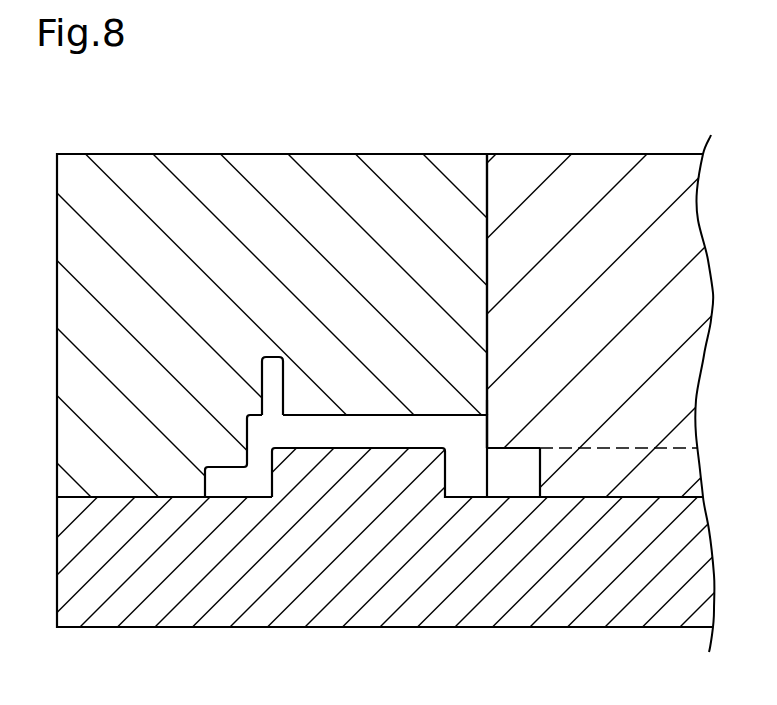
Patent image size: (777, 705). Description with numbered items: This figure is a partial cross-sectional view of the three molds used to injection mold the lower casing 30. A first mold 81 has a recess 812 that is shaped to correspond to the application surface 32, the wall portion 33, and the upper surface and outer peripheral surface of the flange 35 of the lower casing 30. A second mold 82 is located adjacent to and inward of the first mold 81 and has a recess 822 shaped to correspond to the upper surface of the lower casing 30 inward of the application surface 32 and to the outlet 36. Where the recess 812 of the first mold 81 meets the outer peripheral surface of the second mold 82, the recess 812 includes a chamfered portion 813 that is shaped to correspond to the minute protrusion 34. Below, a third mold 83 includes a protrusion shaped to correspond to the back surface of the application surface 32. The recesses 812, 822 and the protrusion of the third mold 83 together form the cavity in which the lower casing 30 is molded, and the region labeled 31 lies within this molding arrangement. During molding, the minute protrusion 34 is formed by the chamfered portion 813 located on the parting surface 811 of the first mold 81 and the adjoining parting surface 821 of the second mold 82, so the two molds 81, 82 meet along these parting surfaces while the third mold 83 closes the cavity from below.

The first mold 81 is at (265, 162).
The second mold 82 is at (606, 162).
The third mold 83 is at (367, 620).
The parting surface 811 is at (488, 297).
The recess 812 is at (333, 417).
The chamfered portion 813 is at (488, 411).
The parting surface 821 is at (487, 263).
The recess 822 is at (519, 450).
The lower casing 30 is at (230, 503).
The first cavity portion 31 is at (466, 498).
The application surface 32 is at (403, 413).
The wall portion 33 is at (278, 355).
The minute protrusion 34 is at (482, 410).
The flange 35 is at (203, 482).
The outlet 36 is at (540, 470).